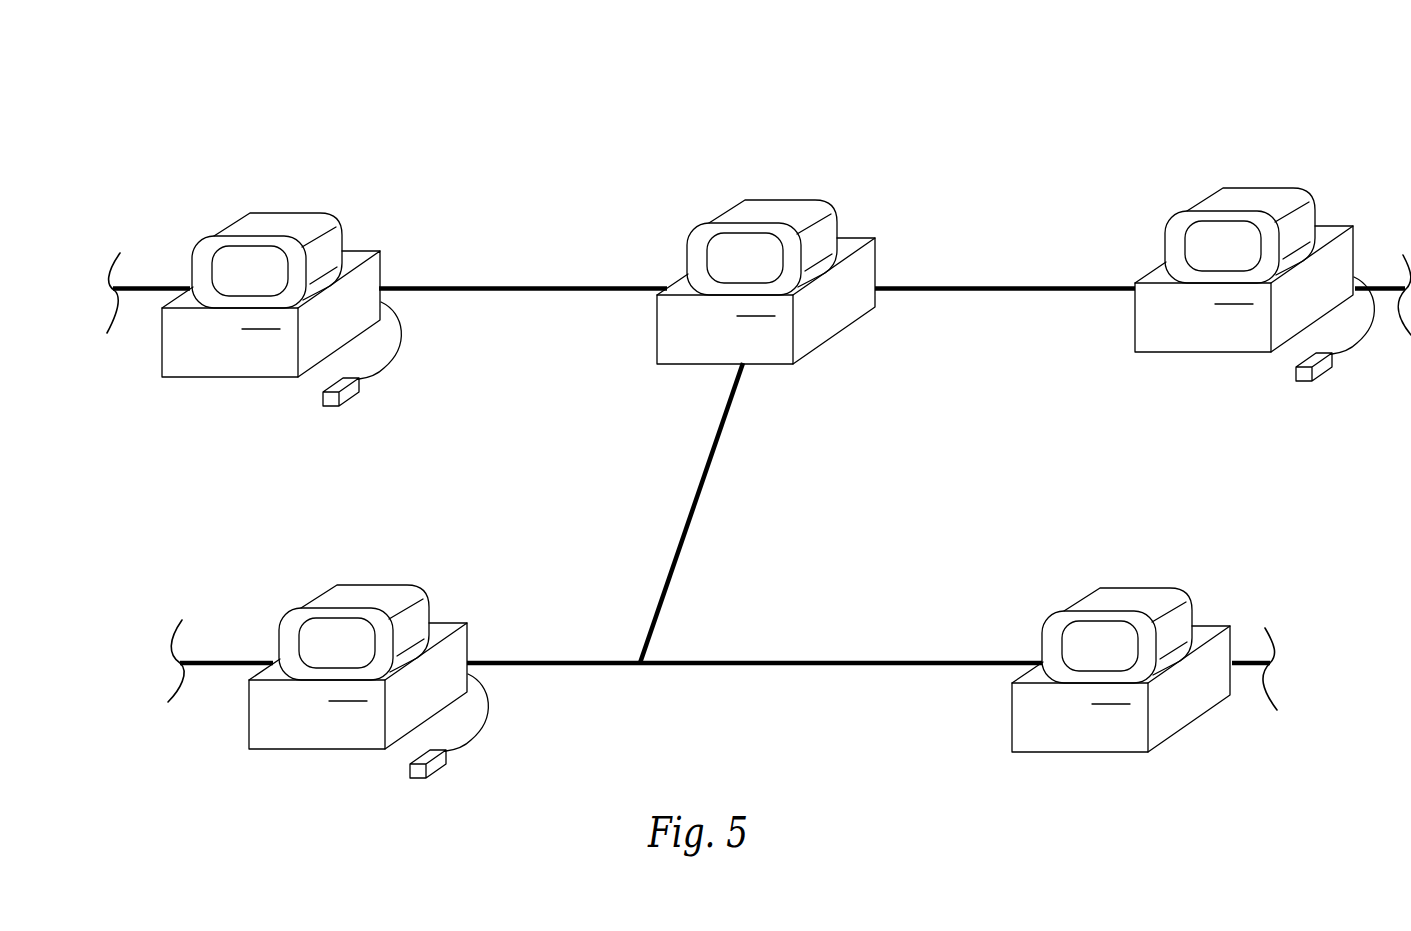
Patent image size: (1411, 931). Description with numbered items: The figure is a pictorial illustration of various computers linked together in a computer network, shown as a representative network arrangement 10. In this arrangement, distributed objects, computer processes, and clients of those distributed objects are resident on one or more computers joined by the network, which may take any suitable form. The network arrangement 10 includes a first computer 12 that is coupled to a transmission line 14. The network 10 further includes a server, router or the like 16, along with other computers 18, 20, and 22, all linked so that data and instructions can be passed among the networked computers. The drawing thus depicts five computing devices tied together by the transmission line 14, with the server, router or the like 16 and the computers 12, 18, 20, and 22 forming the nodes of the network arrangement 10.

The network arrangement 10 is at (175, 127).
The first computer 12 is at (363, 251).
The transmission line 14 is at (475, 292).
The server, router or the like 16 is at (858, 232).
The computer 18 is at (447, 617).
The computer 20 is at (1207, 623).
The computer 22 is at (1133, 330).